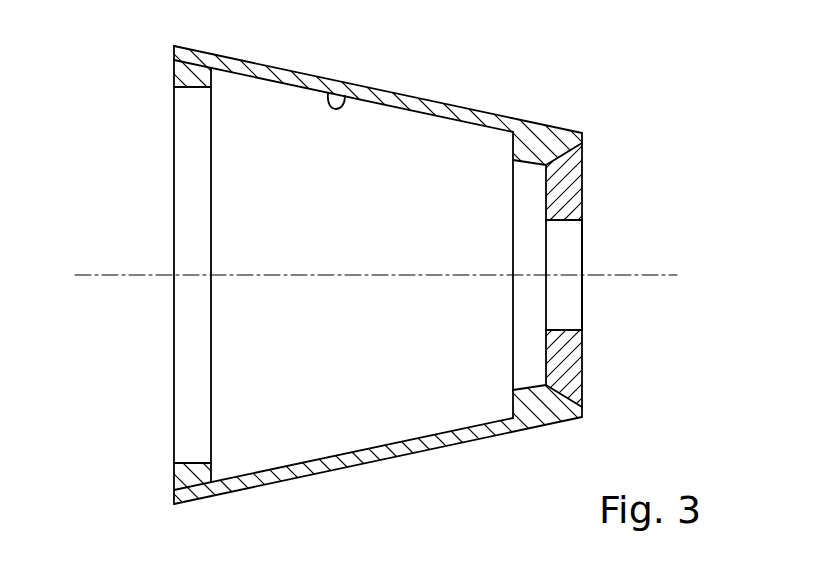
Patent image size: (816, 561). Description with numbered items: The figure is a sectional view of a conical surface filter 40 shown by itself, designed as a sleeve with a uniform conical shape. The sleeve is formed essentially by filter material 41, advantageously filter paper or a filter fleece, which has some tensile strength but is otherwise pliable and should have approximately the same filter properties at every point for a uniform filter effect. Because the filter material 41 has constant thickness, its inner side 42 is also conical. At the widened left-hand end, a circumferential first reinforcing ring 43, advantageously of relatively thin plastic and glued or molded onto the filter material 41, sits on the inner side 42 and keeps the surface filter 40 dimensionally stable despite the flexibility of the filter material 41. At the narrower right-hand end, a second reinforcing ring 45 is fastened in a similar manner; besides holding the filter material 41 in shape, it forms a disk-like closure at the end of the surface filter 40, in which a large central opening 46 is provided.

The conical surface filter 40 is at (408, 280).
The filter material 41 is at (448, 108).
The inner side 42 is at (347, 95).
The first reinforcing ring 43 is at (176, 72).
The second reinforcing ring 45 is at (572, 187).
The central opening 46 is at (572, 255).